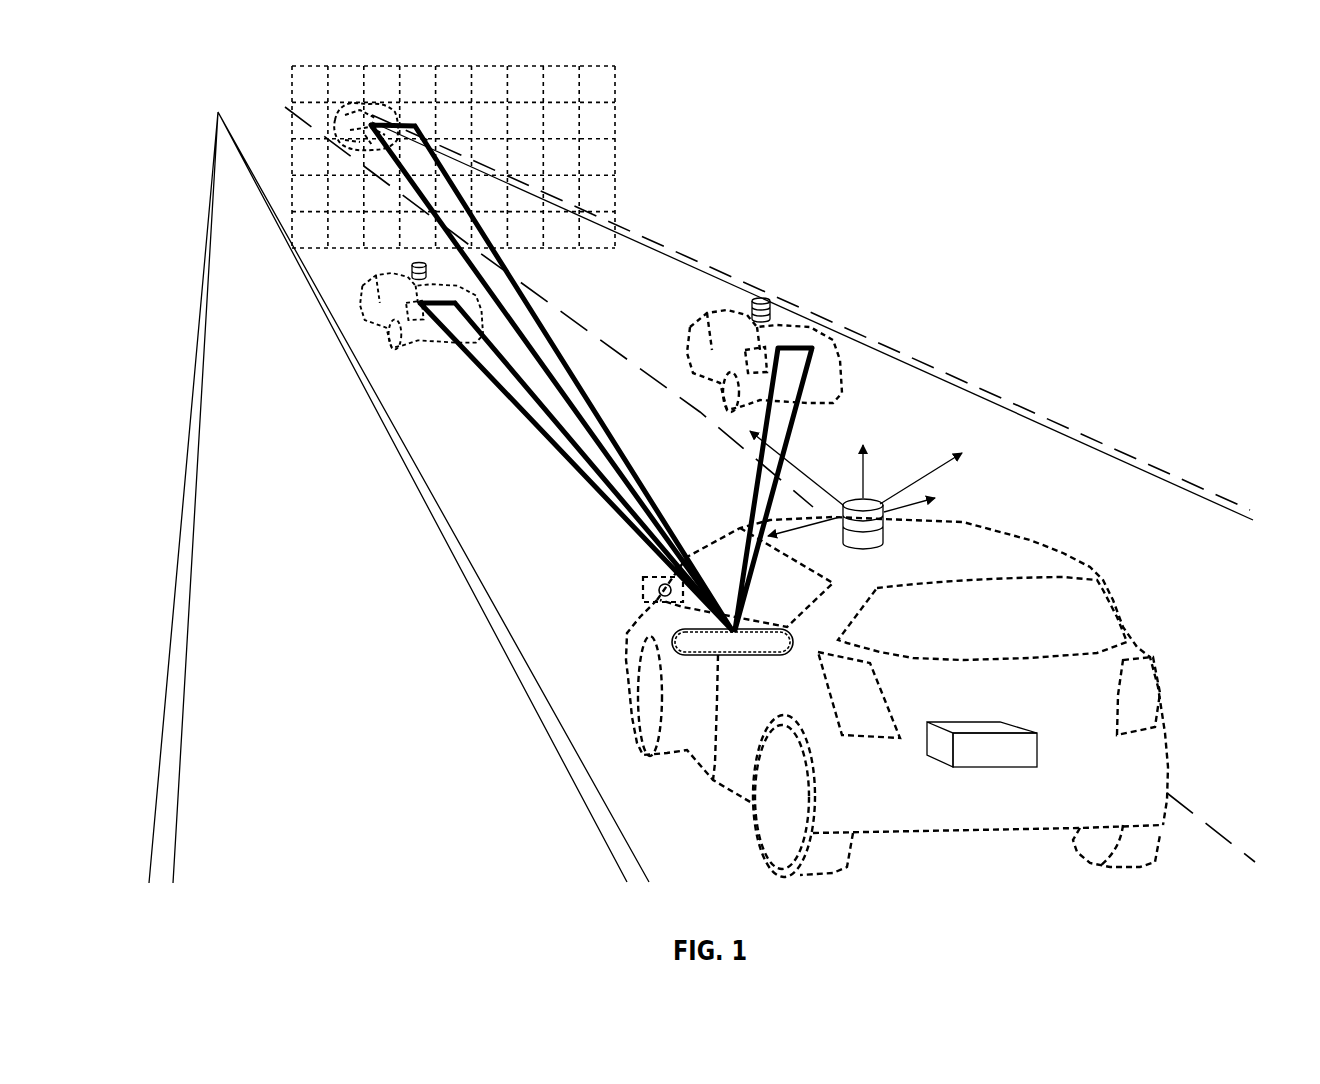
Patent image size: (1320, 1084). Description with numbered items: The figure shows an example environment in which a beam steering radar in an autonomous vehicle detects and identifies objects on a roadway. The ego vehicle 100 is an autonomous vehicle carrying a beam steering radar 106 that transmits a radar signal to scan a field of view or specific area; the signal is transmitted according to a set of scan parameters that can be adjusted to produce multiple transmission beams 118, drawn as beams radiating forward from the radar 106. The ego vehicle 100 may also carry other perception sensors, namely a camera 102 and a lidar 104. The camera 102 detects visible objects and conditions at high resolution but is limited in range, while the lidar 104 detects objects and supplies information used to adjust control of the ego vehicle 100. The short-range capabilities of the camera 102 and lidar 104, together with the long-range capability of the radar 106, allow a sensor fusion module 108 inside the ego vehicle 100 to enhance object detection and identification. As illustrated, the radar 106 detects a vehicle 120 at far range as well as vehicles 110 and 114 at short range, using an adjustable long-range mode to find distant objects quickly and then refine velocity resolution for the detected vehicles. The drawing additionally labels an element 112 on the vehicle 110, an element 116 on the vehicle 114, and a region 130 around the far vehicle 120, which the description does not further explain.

The ego vehicle 100 is at (1080, 563).
The camera 102 is at (662, 585).
The lidar 104 is at (883, 533).
The beam steering radar 106 is at (737, 657).
The sensor fusion module 108 is at (1007, 727).
The vehicle 110 is at (423, 335).
The sensor of first other vehicle 112 is at (413, 266).
The vehicle 114 is at (840, 378).
The sensor of second other vehicle 116 is at (765, 298).
The transmission beams 118 is at (752, 500).
The vehicle 120 is at (372, 102).
The occupancy grid 130 is at (615, 125).